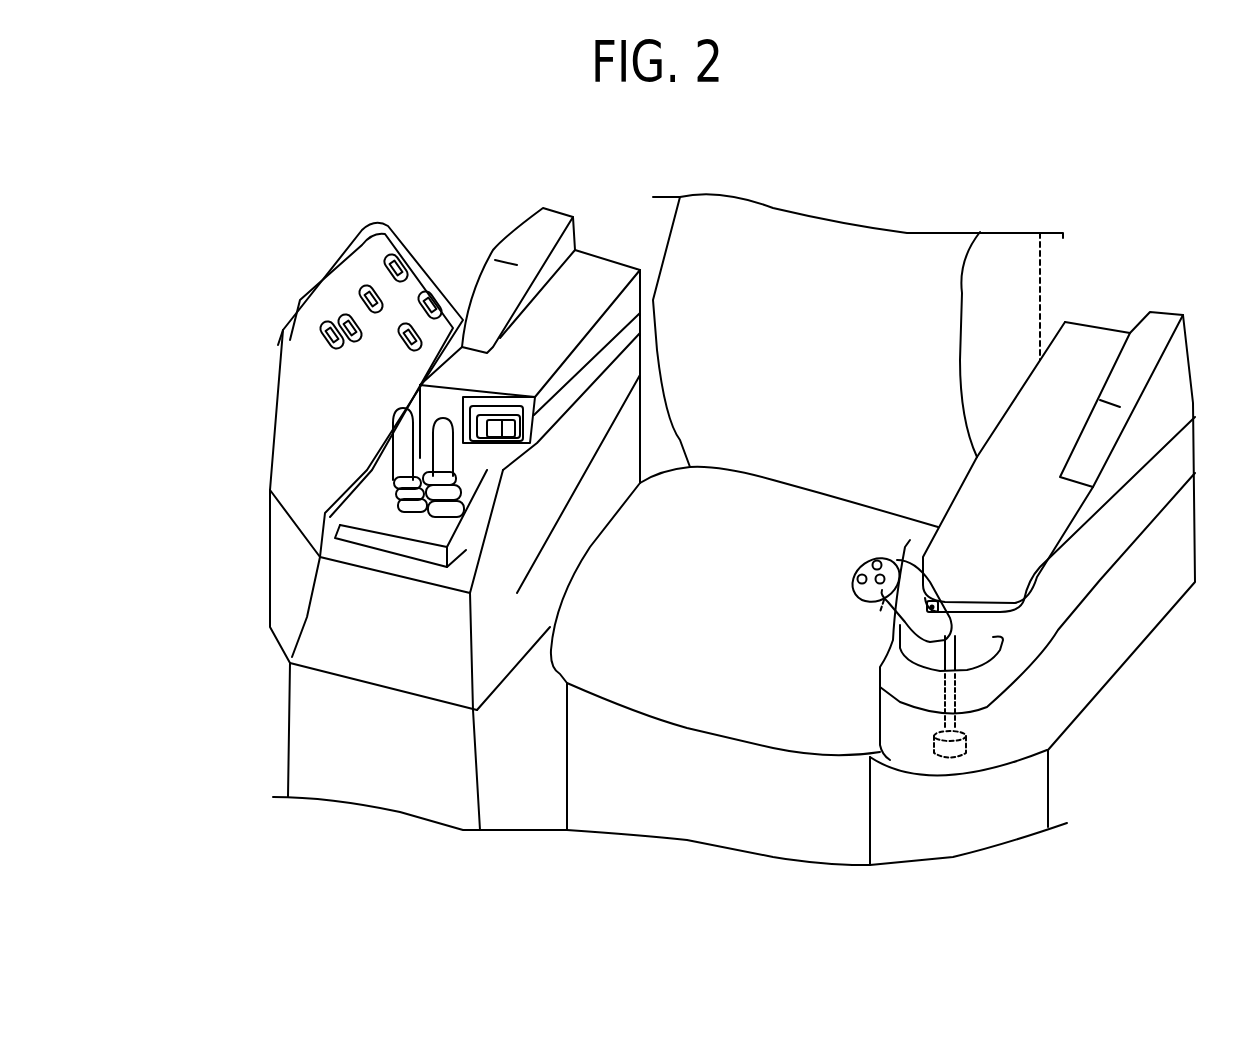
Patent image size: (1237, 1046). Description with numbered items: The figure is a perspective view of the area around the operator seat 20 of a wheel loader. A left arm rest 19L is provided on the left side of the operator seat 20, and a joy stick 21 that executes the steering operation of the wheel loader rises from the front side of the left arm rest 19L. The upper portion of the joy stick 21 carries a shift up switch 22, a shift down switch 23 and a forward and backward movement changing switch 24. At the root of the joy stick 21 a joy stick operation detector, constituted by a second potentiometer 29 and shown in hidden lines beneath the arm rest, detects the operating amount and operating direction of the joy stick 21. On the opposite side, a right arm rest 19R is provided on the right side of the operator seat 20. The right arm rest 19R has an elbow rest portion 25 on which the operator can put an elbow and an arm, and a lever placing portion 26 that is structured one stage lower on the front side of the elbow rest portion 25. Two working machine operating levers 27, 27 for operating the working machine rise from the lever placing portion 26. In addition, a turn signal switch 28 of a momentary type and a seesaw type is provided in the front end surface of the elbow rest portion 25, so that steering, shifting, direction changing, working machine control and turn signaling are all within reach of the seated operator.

The right arm rest 19R is at (288, 268).
The left arm rest 19L is at (1110, 652).
The operator seat 20 is at (700, 708).
The joy stick 21 is at (907, 582).
The shift up switch 22 is at (850, 578).
The shift down switch 23 is at (874, 600).
The forward and backward movement changing switch 24 is at (875, 560).
The elbow rest portion 25 is at (548, 313).
The lever placing portion 26 is at (373, 501).
The working machine operating levers 27 is at (393, 411).
The turn signal switch 28 is at (507, 443).
The second potentiometer 29 is at (967, 755).